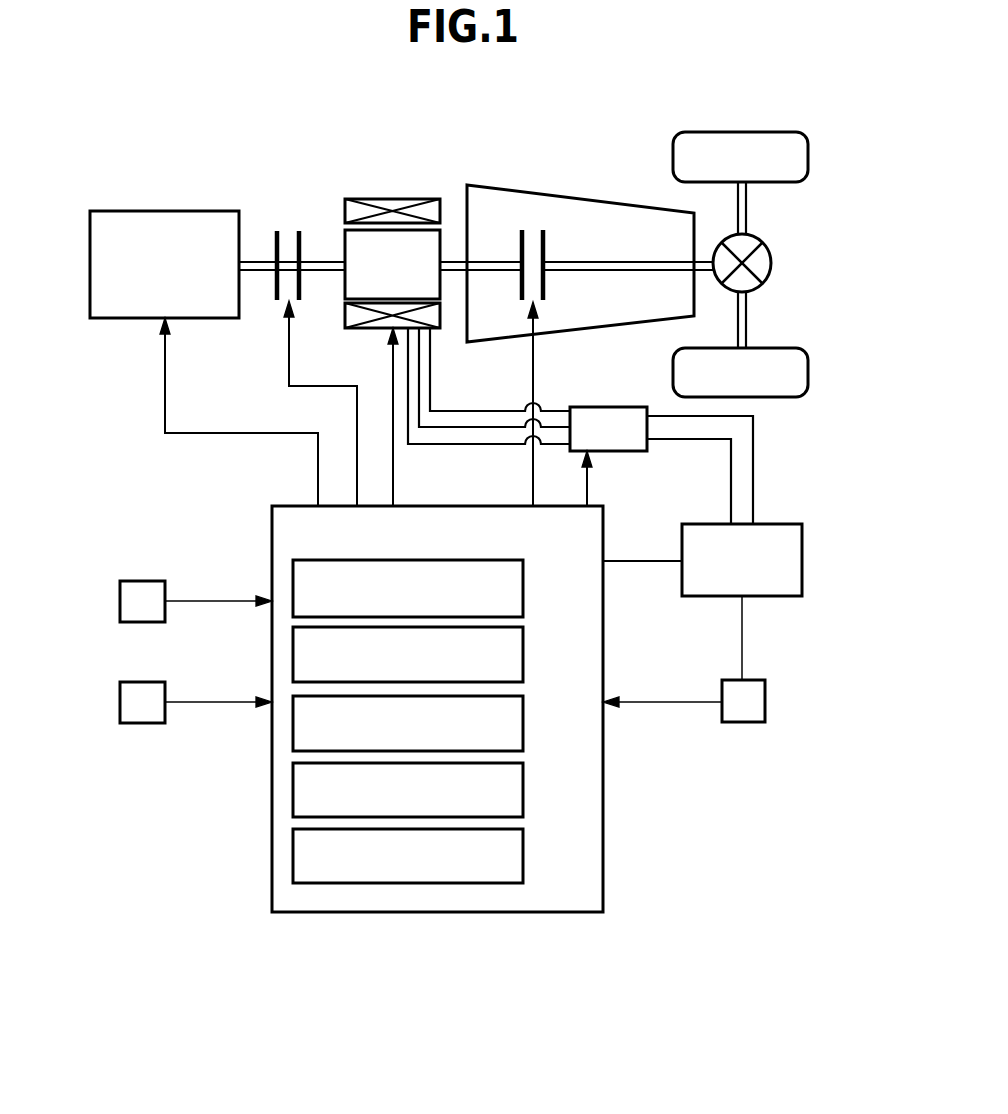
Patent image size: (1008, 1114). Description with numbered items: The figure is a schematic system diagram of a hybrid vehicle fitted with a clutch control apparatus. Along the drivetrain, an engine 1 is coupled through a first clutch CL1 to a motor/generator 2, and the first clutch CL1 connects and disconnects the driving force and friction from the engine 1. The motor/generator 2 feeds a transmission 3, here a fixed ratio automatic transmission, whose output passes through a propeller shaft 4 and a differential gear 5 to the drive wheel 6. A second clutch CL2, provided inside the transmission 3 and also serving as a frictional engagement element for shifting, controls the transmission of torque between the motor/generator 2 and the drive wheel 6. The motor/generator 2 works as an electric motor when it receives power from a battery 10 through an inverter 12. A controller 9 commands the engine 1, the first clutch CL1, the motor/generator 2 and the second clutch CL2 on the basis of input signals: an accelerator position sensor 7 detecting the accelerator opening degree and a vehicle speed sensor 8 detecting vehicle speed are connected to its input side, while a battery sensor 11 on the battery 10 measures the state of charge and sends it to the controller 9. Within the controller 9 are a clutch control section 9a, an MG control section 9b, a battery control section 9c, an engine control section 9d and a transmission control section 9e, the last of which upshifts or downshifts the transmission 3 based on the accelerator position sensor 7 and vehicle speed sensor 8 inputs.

The engine 1 is at (165, 211).
The first clutch CL1 is at (288, 230).
The motor/generator 2 is at (392, 199).
The second clutch CL2 is at (534, 230).
The transmission 3 is at (606, 207).
The propeller shaft 4 is at (572, 262).
The differential gear 5 is at (771, 263).
The drive wheel 6 is at (808, 146).
The accelerator position sensor 7 is at (145, 682).
The vehicle speed sensor 8 is at (145, 581).
The controller 9 is at (603, 830).
The clutch control section 9a is at (523, 592).
The MG control section 9b is at (523, 658).
The battery control section 9c is at (523, 725).
The engine control section 9d is at (523, 791).
The transmission control section 9e is at (523, 858).
The battery 10 is at (802, 561).
The battery sensor 11 is at (765, 700).
The inverter 12 is at (612, 407).